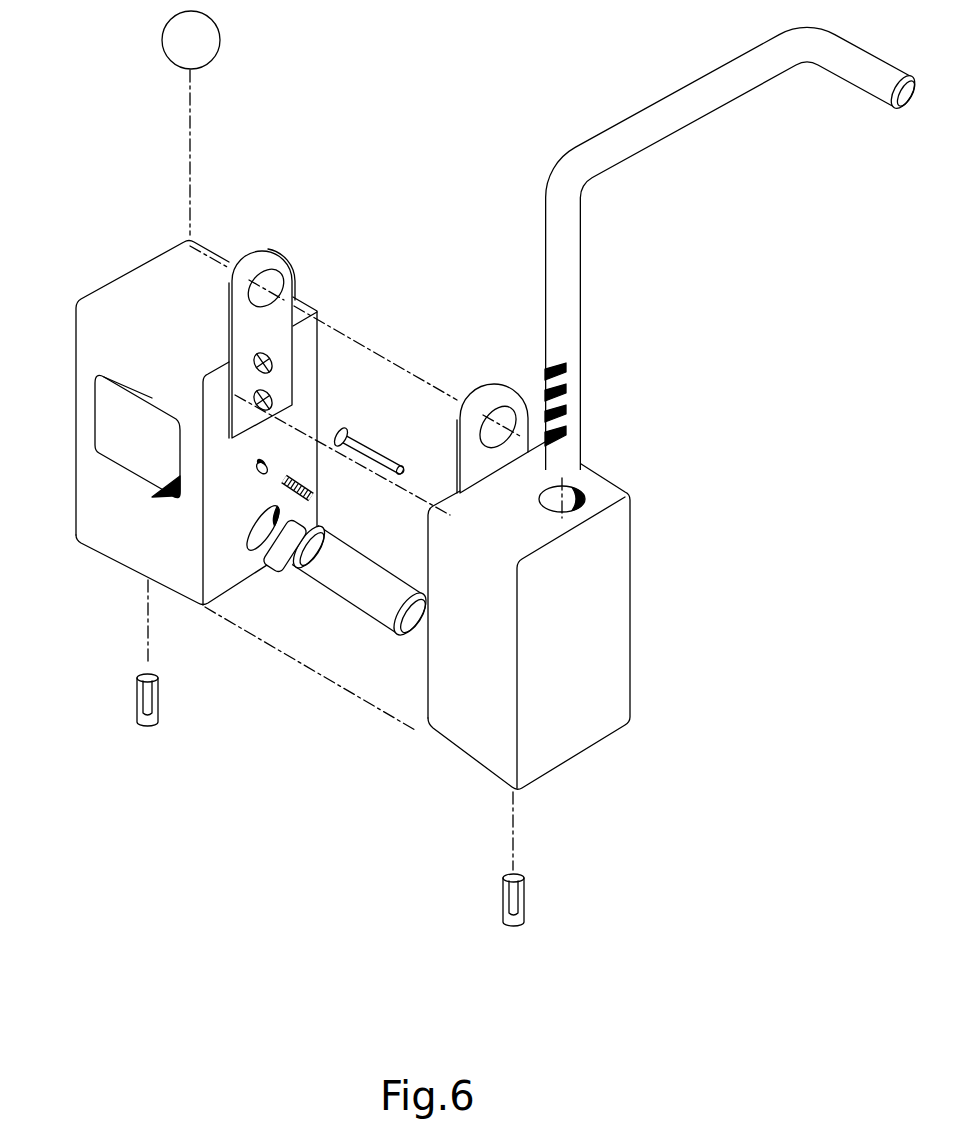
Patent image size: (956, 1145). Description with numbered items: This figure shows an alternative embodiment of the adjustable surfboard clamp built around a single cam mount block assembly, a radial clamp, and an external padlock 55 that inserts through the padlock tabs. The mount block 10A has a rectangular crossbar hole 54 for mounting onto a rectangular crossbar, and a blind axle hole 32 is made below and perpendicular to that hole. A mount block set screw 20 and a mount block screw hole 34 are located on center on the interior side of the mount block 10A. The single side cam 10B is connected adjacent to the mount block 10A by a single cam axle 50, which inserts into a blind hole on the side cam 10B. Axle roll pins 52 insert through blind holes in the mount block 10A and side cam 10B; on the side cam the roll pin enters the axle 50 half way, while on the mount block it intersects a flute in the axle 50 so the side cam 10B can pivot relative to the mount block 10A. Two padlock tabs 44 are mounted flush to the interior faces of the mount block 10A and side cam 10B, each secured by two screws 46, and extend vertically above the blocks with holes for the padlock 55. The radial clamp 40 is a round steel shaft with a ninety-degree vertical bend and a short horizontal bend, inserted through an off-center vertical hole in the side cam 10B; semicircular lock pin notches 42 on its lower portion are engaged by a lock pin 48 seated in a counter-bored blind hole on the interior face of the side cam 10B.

The mount block 10A is at (226, 245).
The single side cam 10B is at (638, 615).
The mount block set screw 20 is at (328, 506).
The blind axle hole 32 is at (244, 510).
The mount block screw hole 34 is at (256, 463).
The radial clamp 40 is at (657, 85).
The lock pin notches 42 is at (567, 400).
The padlock tabs 44 is at (493, 373).
The screws 46 is at (247, 390).
The lock pin 48 is at (382, 450).
The single cam axle 50 is at (337, 605).
The axle roll pins 52 is at (488, 900).
The rectangular crossbar hole 54 is at (86, 414).
The padlock 55 is at (162, 40).